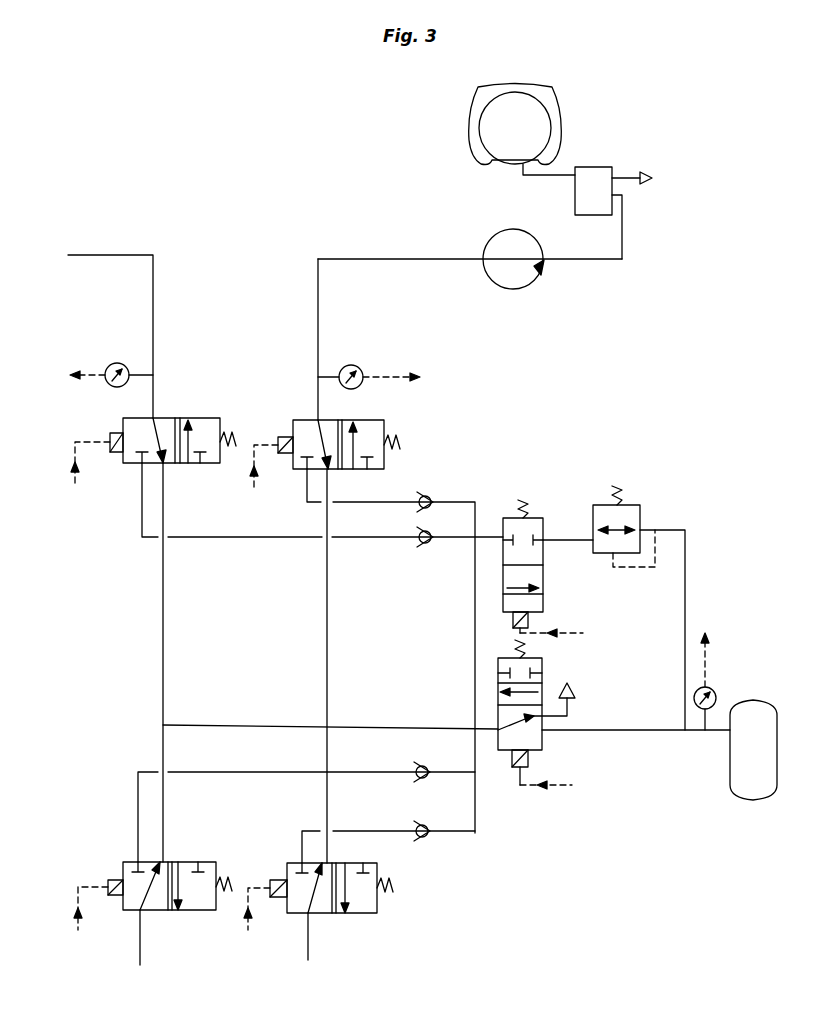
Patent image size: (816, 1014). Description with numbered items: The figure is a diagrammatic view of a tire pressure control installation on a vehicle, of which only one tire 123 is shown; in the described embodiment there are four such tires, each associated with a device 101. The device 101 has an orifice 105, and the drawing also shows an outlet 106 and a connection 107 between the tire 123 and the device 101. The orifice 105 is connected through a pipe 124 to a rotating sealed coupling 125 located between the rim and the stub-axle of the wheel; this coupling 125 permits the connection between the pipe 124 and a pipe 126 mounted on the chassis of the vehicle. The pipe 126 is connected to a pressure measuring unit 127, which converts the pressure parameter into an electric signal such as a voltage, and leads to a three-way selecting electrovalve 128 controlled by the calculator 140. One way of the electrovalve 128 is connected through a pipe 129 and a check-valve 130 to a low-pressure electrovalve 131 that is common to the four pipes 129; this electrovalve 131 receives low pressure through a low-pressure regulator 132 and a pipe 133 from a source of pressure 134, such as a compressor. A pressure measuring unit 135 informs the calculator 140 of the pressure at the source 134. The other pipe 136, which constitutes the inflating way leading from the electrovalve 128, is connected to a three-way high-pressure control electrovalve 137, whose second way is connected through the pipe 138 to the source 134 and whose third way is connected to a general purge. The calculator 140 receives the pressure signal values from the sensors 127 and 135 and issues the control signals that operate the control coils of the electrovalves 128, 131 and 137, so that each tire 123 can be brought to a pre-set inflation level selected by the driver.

The device 101 is at (594, 178).
The orifice 105 is at (623, 205).
The outlet 106 is at (628, 176).
The tire conduit 107 is at (537, 176).
The tire 123 is at (469, 128).
The pipe 124 is at (597, 262).
The rotating sealed coupling 125 is at (515, 289).
The pipe 126 is at (152, 289).
The pressure measuring unit 127 is at (118, 362).
The three-way selecting electrovalve 128 is at (164, 418).
The pipe 129 is at (395, 503).
The check-valve 130 is at (425, 495).
The low-pressure electrovalve 131 is at (543, 575).
The low-pressure regulator 132 is at (640, 512).
The pipe 133 is at (685, 560).
The source of pressure 134 is at (730, 755).
The pressure measuring unit 135 is at (712, 690).
The pipe 136 is at (163, 643).
The three-way high-pressure control electrovalve 137 is at (542, 745).
The pipe 138 is at (623, 730).
The calculator 140 is at (384, 662).